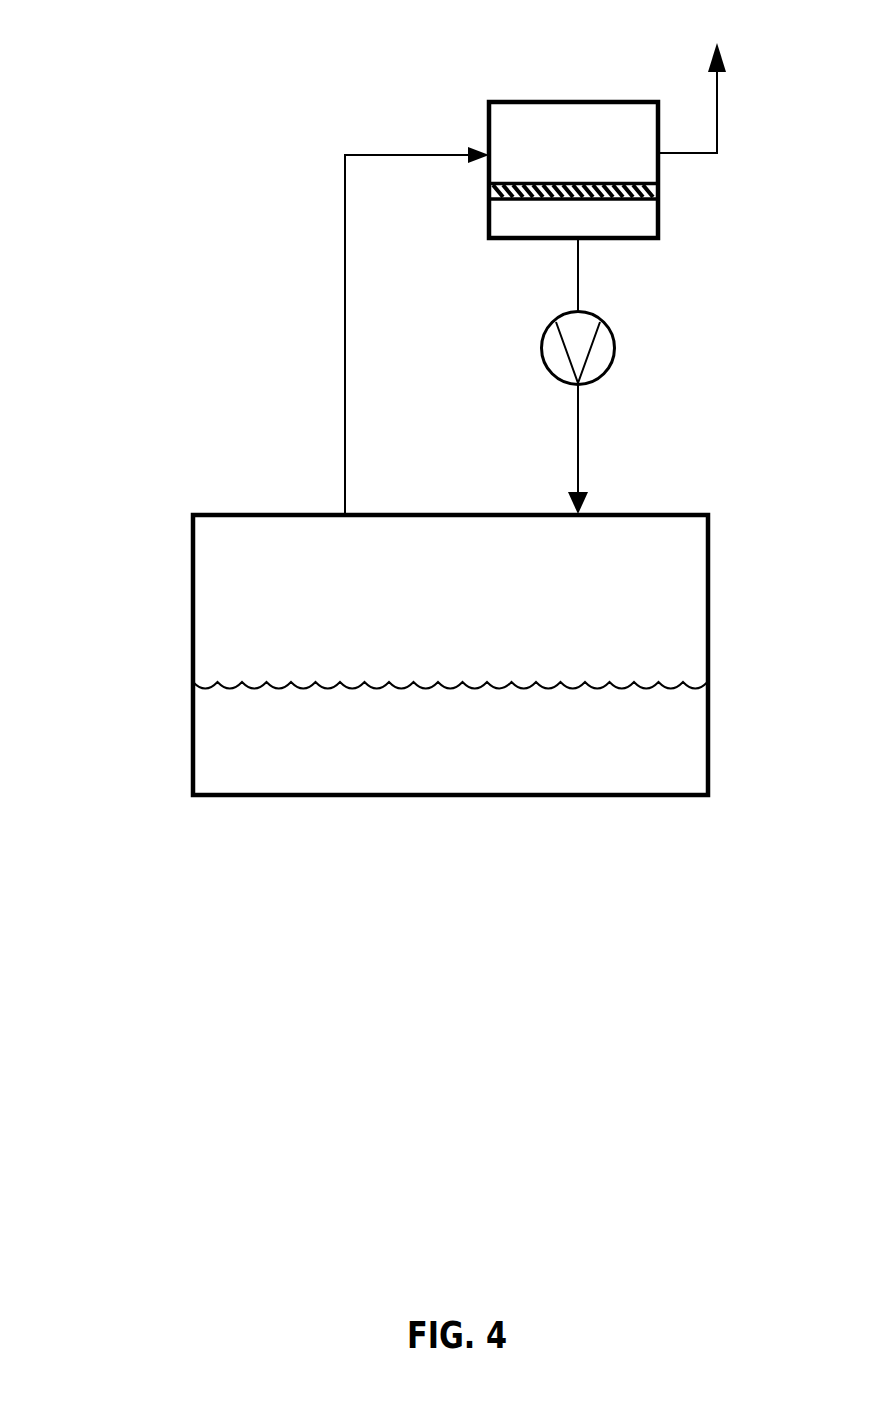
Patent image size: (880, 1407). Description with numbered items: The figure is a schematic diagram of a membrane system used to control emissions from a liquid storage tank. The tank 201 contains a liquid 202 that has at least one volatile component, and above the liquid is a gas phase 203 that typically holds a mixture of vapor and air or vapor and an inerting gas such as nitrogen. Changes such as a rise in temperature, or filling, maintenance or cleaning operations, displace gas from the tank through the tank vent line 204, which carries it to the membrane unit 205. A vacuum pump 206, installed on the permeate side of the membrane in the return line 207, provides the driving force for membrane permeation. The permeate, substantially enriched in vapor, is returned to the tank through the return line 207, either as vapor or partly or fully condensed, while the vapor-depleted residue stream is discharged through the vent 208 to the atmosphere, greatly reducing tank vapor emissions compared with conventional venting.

The tank 201 is at (192, 753).
The liquid 202 is at (450, 721).
The gas phase 203 is at (450, 566).
The tank vent line 204 is at (383, 331).
The membrane unit 205 is at (573, 150).
The vacuum pump 206 is at (611, 311).
The return line 207 is at (607, 449).
The vent 208 is at (699, 78).